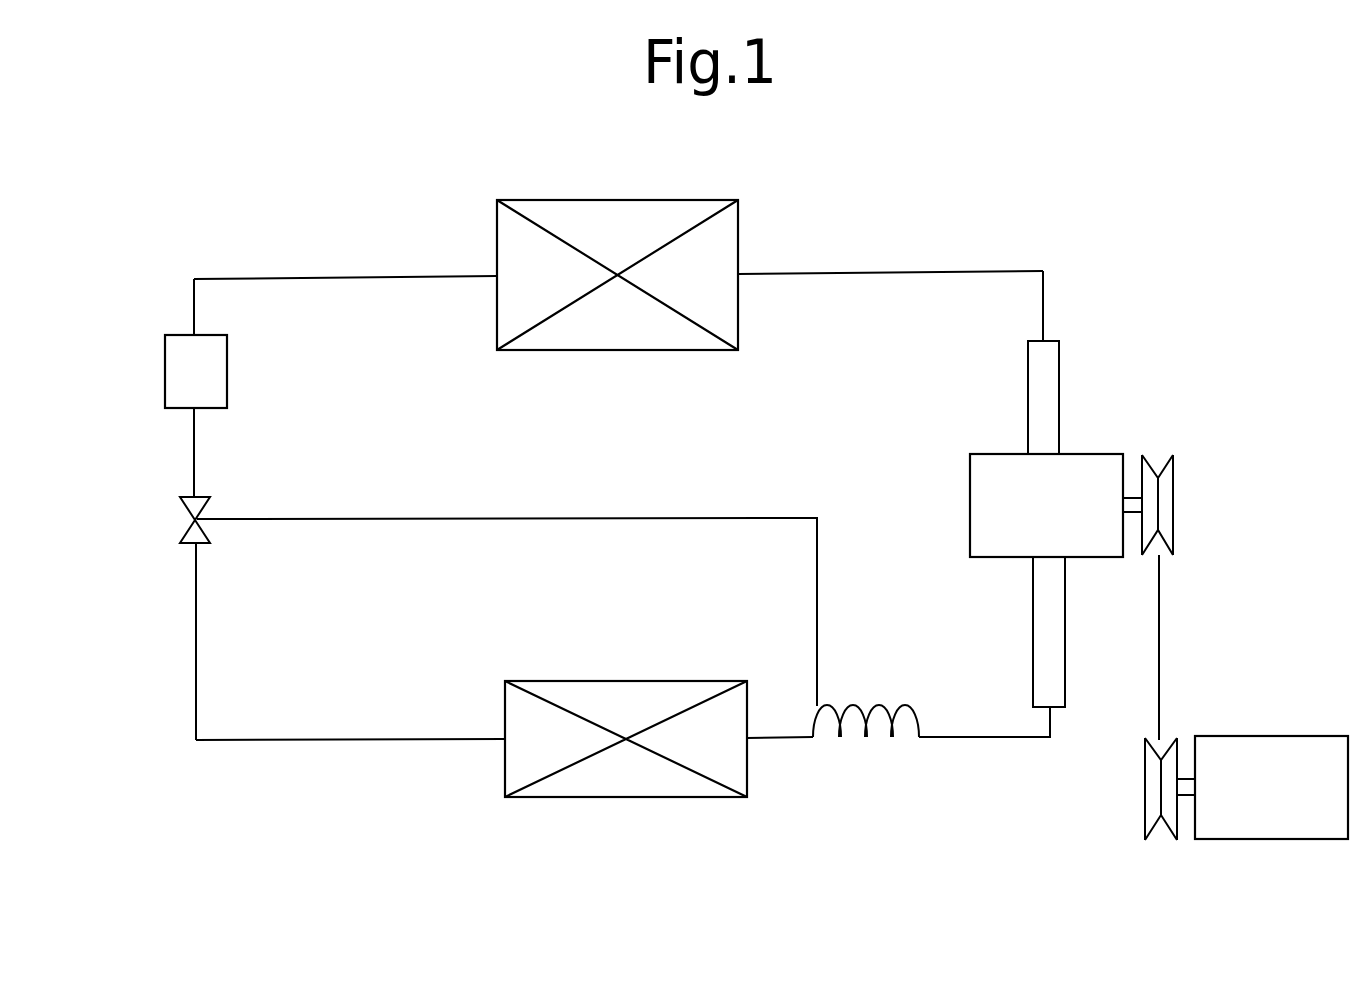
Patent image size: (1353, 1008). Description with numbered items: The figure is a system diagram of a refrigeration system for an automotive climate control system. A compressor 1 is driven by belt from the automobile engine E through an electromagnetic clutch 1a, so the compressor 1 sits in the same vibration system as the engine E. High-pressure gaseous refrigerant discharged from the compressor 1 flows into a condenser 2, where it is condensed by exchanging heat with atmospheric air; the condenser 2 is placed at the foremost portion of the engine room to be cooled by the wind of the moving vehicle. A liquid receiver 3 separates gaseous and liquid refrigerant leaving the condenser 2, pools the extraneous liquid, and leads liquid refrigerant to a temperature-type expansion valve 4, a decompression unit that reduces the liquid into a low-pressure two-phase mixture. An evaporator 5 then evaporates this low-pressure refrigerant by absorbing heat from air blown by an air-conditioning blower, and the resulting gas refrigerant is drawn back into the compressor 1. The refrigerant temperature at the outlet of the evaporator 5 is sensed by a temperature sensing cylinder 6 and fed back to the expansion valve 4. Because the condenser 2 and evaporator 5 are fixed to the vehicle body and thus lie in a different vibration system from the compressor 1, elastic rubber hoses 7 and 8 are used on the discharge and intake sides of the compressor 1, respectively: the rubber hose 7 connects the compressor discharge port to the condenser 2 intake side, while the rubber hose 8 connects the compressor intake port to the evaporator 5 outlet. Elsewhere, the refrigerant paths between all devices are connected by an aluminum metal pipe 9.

The compressor 1 is at (1090, 454).
The electromagnetic clutch 1a is at (1173, 490).
The condenser 2 is at (710, 200).
The liquid receiver 3 is at (165, 387).
The temperature-type expansion valve 4 is at (186, 533).
The evaporator 5 is at (545, 797).
The temperature sensing cylinder 6 is at (880, 705).
The rubber hose 7 is at (1059, 378).
The rubber hose 8 is at (1065, 648).
The metal pipe 9 is at (375, 277).
The automobile engine E is at (1300, 839).